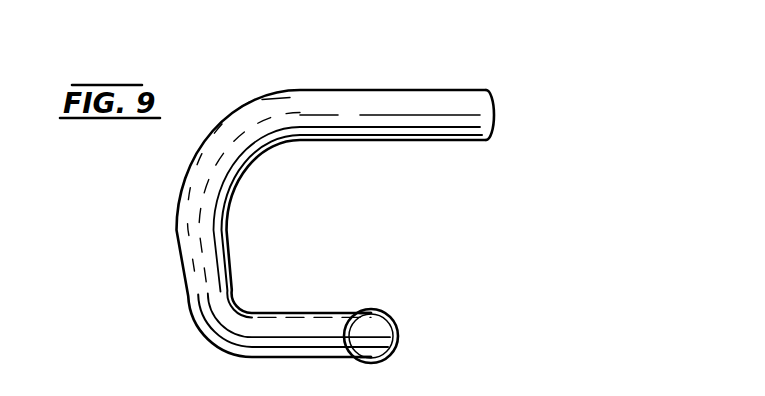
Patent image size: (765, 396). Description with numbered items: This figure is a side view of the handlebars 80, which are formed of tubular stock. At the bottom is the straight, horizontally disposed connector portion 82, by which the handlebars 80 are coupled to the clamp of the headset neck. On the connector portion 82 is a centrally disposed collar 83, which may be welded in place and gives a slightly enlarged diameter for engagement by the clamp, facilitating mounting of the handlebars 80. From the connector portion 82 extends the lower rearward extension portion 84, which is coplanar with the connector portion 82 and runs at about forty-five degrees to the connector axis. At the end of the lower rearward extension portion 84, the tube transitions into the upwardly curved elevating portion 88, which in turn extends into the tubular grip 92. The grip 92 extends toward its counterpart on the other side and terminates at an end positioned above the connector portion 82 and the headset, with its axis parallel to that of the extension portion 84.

The handlebars 80 is at (537, 78).
The connector portion 82 is at (404, 314).
The collar 83 is at (396, 350).
The right-hand side lower rearward extension portion 84 is at (295, 313).
The right elevating portion 88 is at (177, 225).
The right tubular grip 92 is at (370, 90).